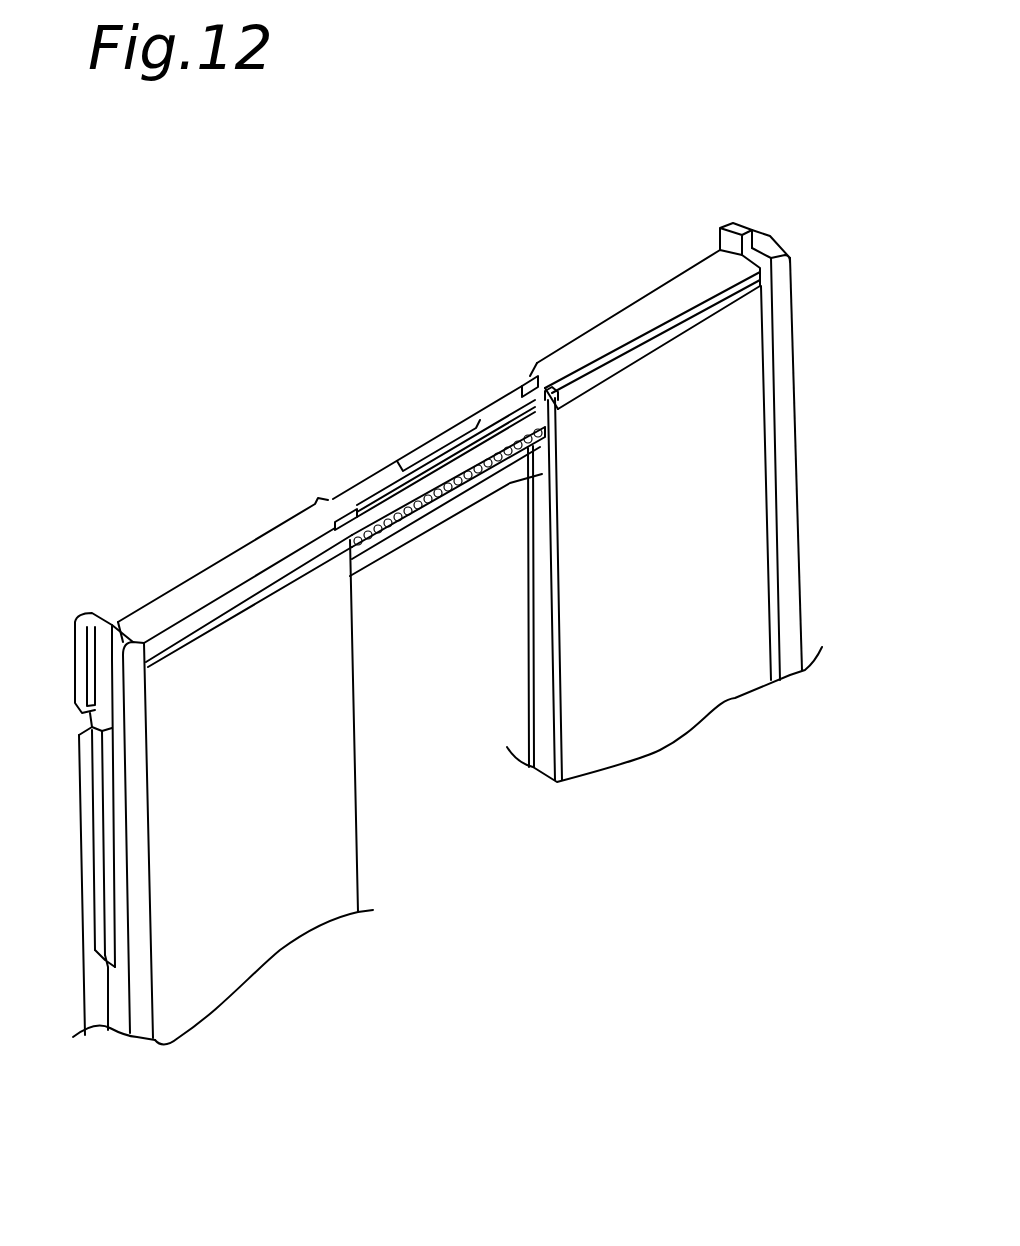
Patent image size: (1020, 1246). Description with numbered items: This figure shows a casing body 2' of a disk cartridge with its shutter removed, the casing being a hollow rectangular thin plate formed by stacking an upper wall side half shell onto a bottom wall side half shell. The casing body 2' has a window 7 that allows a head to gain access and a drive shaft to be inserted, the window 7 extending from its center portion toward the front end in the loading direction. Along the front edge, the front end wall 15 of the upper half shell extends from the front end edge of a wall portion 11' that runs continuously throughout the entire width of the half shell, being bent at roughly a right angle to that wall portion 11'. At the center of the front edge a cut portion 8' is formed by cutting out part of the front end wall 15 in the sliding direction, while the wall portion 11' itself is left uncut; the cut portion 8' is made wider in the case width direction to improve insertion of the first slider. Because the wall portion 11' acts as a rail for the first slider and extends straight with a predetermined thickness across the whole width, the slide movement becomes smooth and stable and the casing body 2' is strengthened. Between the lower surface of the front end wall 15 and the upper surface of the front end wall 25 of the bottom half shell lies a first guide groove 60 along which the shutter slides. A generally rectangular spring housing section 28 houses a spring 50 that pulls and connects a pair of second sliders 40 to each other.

The casing body 2' is at (797, 421).
The window 7 is at (478, 791).
The cut portion 8' is at (446, 447).
The wall portion 11' is at (434, 393).
The front end wall 15 is at (618, 332).
The front end wall 25 is at (668, 337).
The spring housing section 28 is at (510, 465).
The second slider 40 is at (357, 525).
The spring 50 is at (385, 533).
The first guide groove 60 is at (195, 632).